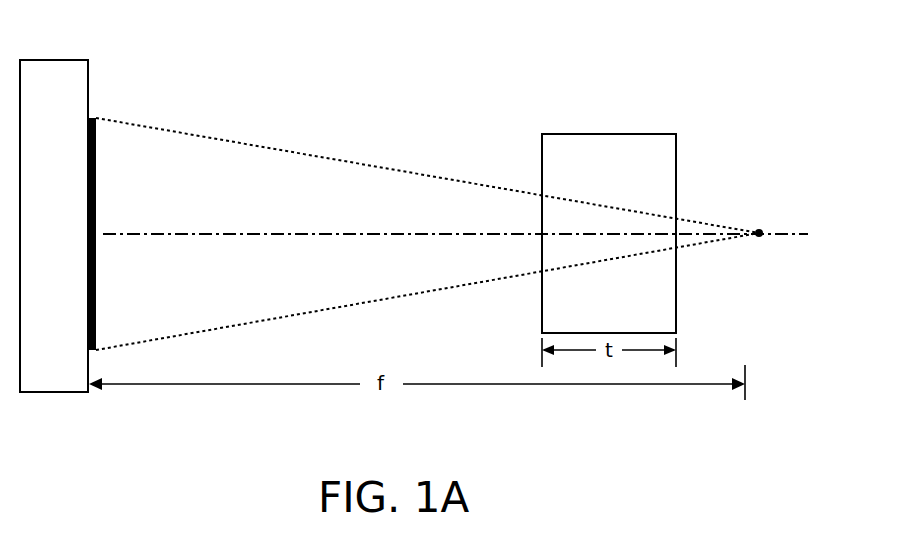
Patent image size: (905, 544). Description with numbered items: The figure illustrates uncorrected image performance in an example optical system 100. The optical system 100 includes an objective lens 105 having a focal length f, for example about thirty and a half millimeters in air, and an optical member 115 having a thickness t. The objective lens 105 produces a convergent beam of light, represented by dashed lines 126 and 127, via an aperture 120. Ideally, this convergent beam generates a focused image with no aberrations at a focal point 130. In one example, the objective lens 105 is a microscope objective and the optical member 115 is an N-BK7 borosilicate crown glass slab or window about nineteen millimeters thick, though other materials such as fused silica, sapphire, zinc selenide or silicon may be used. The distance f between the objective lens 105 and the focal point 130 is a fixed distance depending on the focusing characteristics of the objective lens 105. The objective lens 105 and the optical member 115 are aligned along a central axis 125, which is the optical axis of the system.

The optical system 100 is at (697, 50).
The objective lens 105 is at (88, 90).
The optical member 115 is at (676, 176).
The aperture 120 is at (96, 198).
The central axis 125 is at (141, 234).
The dashed line 126 is at (178, 132).
The dashed line 127 is at (170, 336).
The focal point 130 is at (760, 229).